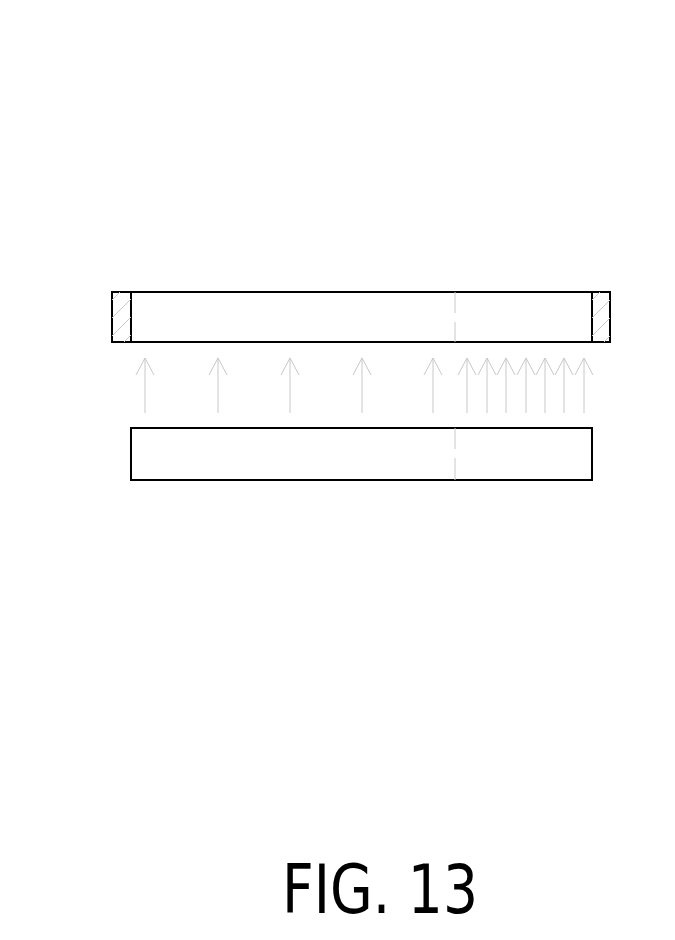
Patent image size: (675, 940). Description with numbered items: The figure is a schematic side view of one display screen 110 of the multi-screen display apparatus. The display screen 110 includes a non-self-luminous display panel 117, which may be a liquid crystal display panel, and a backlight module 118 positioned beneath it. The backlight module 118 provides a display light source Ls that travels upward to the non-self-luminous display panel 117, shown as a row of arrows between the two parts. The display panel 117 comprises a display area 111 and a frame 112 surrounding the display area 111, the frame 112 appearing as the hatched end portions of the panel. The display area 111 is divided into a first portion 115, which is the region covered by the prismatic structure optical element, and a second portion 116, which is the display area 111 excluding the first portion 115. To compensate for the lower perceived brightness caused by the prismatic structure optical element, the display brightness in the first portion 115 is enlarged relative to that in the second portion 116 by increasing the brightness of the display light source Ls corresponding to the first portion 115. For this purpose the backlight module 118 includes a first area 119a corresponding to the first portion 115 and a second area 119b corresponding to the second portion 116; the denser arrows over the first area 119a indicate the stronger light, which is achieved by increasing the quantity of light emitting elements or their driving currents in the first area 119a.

The display screen 110 is at (152, 67).
The non-self-luminous display panel 117 is at (465, 103).
The frame 112 is at (122, 300).
The display area 111 is at (520, 177).
The second portion 116 is at (377, 313).
The first portion 115 is at (479, 313).
The display light source Ls is at (145, 392).
The backlight module 118 is at (532, 587).
The second area 119b is at (373, 460).
The first area 119a is at (477, 460).